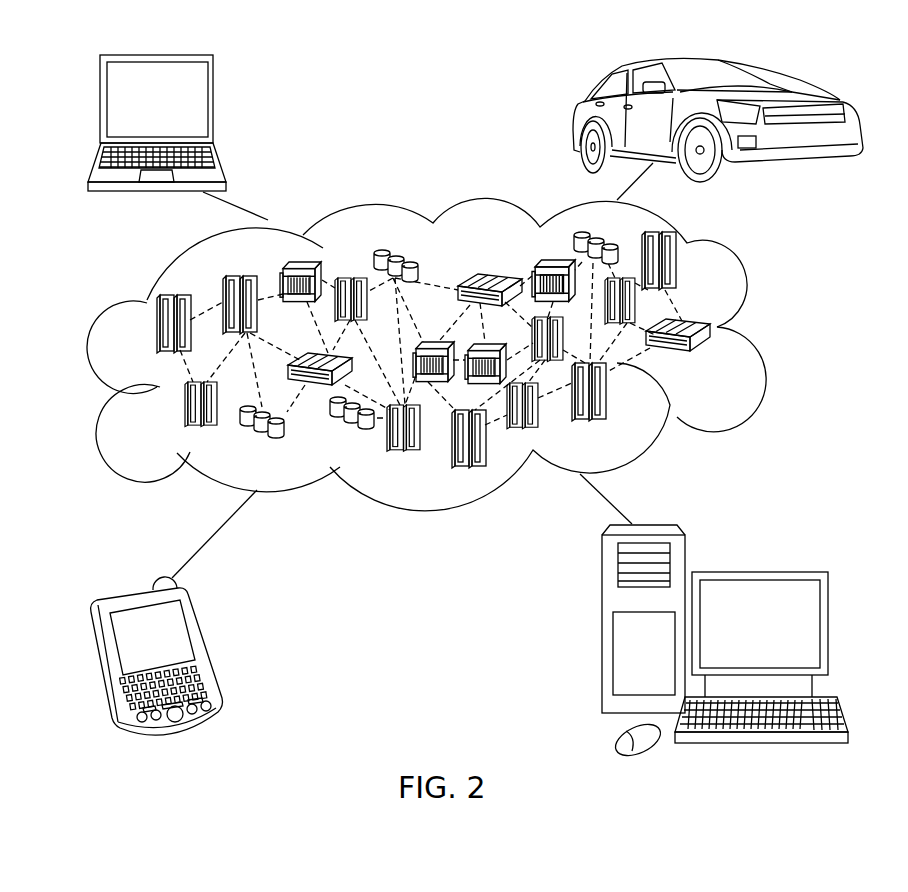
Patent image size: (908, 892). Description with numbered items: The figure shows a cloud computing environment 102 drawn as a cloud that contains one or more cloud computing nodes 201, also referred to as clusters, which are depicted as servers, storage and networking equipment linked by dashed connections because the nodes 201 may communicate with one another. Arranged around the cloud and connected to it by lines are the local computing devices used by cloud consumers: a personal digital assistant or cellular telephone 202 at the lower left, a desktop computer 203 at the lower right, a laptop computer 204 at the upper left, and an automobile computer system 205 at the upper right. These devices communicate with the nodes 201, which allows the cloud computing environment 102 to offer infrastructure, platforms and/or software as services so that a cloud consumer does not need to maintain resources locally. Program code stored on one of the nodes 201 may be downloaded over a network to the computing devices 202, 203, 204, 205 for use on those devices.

The cloud computing environment 102 is at (760, 333).
The cloud computing nodes 201 is at (717, 362).
The personal digital assistant or cellular telephone 202 is at (207, 648).
The desktop computer 203 is at (757, 572).
The laptop computer 204 is at (215, 105).
The automobile computer system 205 is at (573, 118).